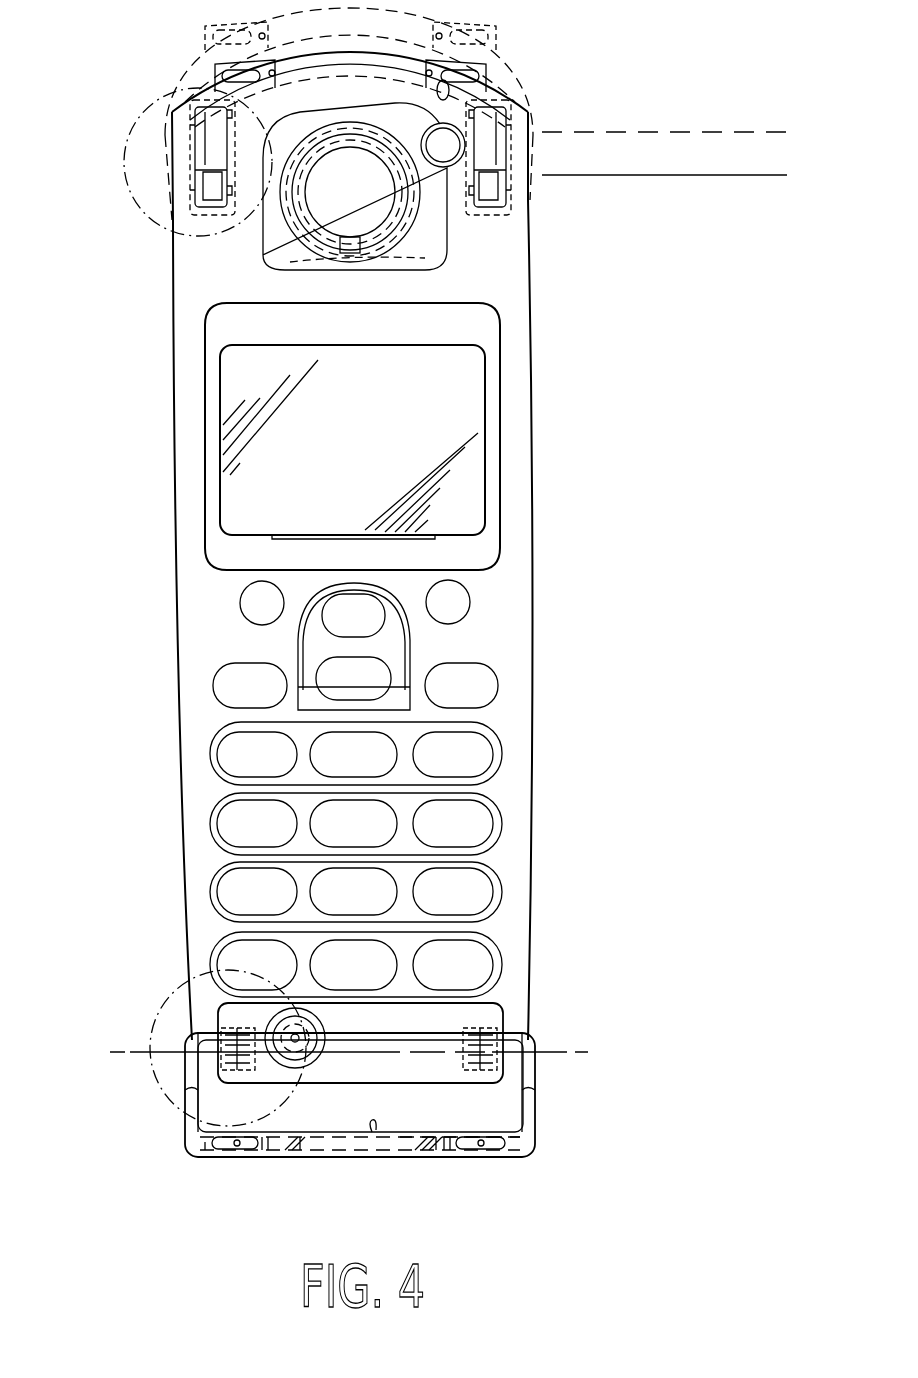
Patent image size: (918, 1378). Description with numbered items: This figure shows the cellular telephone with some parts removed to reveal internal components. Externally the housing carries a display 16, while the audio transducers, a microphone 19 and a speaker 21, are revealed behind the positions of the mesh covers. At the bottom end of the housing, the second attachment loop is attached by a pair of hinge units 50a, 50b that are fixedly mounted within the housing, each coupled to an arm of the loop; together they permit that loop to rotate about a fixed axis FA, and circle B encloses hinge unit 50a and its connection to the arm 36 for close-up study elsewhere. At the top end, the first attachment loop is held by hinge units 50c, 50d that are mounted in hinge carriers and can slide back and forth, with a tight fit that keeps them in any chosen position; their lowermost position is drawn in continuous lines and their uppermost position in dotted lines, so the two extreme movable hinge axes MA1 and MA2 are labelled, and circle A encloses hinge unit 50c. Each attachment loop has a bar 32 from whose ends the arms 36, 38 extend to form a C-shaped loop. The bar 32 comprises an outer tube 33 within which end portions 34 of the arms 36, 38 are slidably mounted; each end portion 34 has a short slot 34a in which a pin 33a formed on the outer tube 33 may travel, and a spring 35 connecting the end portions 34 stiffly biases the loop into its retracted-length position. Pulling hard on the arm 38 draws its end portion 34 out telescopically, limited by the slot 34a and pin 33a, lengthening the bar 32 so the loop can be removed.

The display 16 is at (368, 451).
The microphone 19 is at (300, 1040).
The speaker 21 is at (323, 203).
The bar 32 is at (429, 1162).
The outer tube 33 is at (372, 1135).
The pin 33a is at (203, 1142).
The end portions 34 is at (252, 1162).
The short slot 34a is at (242, 1157).
The spring 35 is at (430, 1133).
The arm 36 is at (185, 1092).
The arm 38 is at (537, 1117).
The hinge unit 50a is at (242, 1078).
The hinge unit 50b is at (496, 1024).
The hinge unit 50c is at (180, 197).
The hinge unit 50d is at (532, 195).
The circle A is at (128, 150).
The circle B is at (167, 995).
The hinge axis MA1 is at (675, 132).
The hinge axis MA2 is at (675, 175).
The fixed axis FA is at (347, 1050).